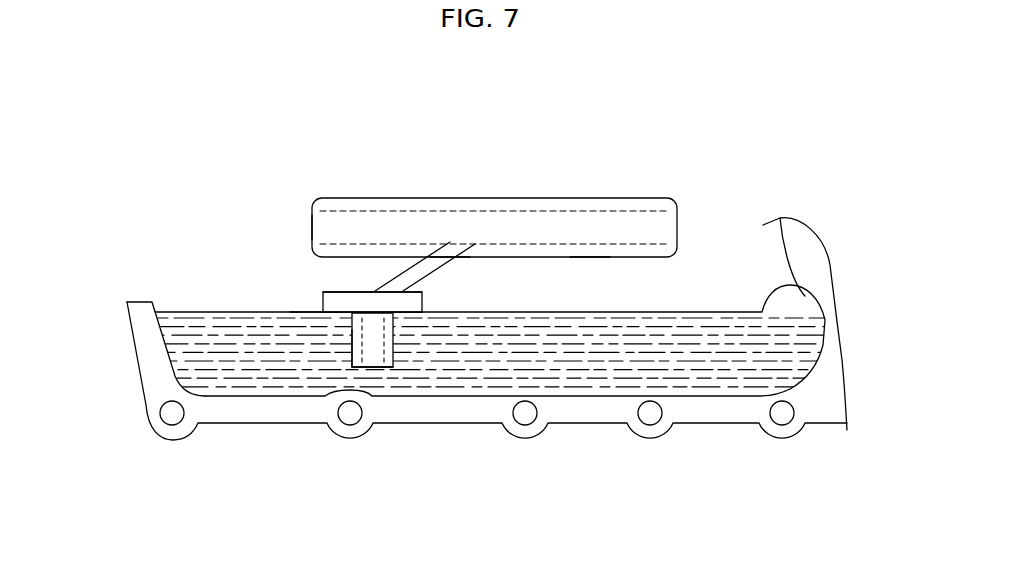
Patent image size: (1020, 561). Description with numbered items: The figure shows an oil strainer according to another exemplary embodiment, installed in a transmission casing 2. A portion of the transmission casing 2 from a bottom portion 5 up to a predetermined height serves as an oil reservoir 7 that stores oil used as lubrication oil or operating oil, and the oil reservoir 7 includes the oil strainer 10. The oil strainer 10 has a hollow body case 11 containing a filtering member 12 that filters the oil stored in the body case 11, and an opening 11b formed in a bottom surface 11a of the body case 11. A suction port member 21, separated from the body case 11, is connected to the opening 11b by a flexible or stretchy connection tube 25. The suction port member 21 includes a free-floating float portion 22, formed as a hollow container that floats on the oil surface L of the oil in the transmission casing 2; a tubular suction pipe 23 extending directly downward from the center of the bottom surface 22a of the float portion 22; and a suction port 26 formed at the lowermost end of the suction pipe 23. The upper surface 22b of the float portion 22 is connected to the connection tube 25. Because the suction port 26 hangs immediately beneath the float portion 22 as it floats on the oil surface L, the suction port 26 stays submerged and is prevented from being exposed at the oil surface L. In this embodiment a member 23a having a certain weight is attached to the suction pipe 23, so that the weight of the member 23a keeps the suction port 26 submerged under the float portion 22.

The transmission casing 2 is at (157, 353).
The bottom portion 5 is at (593, 392).
The oil reservoir 7 is at (719, 245).
The oil strainer 10 is at (627, 190).
The body case 11 is at (430, 197).
The bottom surface 11a is at (588, 257).
The opening 11b is at (449, 257).
The filtering member 12 is at (313, 228).
The suction port member 21 is at (318, 303).
The float portion 22 is at (423, 308).
The bottom surface 22a is at (327, 313).
The upper surface 22b is at (323, 292).
The suction pipe 23 is at (393, 338).
The member 23a is at (352, 340).
The connection tube 25 is at (392, 283).
The suction port 26 is at (380, 367).
The oil surface L is at (833, 297).